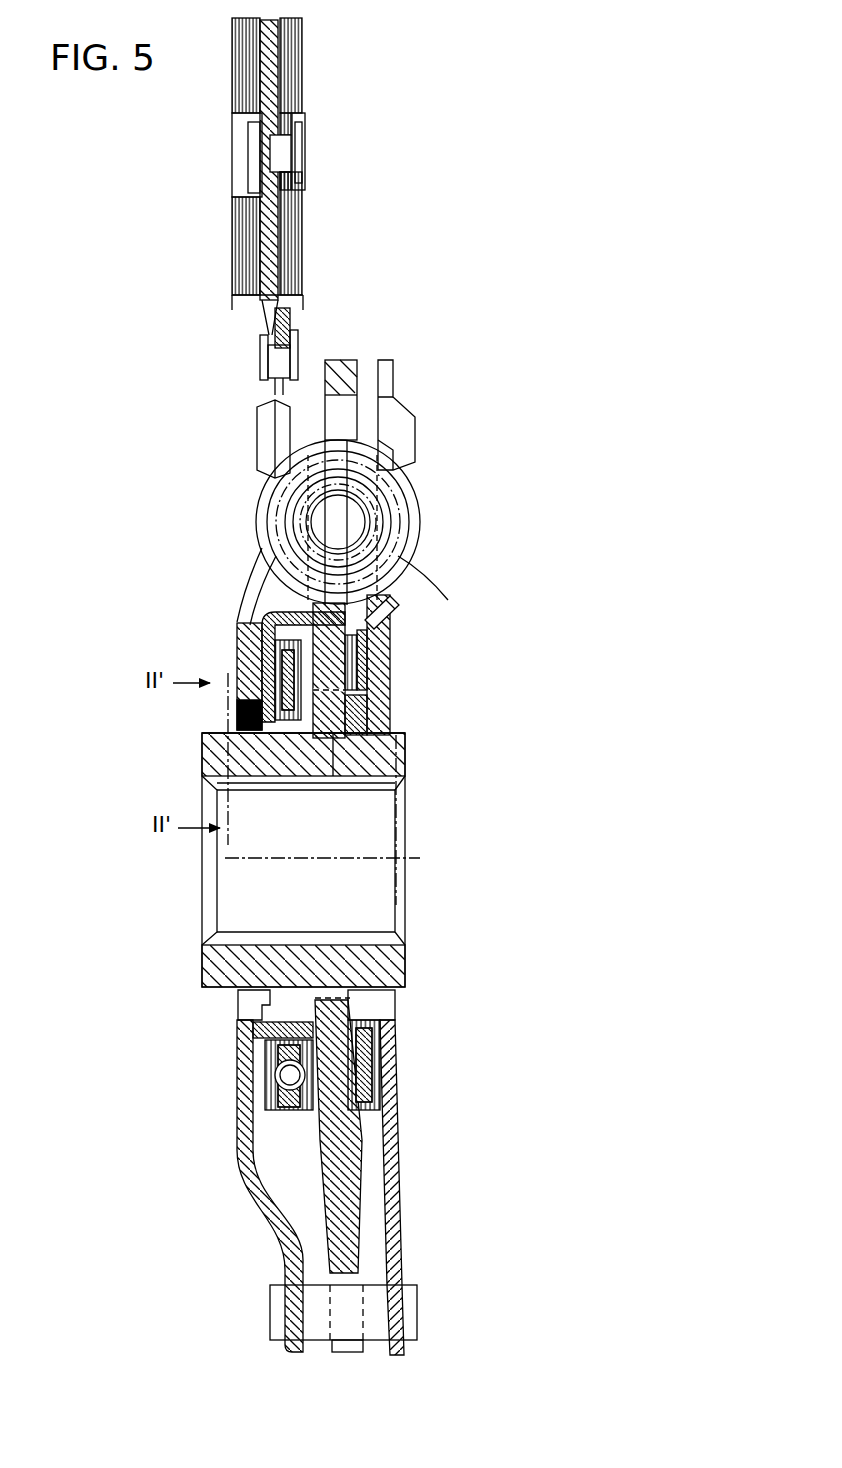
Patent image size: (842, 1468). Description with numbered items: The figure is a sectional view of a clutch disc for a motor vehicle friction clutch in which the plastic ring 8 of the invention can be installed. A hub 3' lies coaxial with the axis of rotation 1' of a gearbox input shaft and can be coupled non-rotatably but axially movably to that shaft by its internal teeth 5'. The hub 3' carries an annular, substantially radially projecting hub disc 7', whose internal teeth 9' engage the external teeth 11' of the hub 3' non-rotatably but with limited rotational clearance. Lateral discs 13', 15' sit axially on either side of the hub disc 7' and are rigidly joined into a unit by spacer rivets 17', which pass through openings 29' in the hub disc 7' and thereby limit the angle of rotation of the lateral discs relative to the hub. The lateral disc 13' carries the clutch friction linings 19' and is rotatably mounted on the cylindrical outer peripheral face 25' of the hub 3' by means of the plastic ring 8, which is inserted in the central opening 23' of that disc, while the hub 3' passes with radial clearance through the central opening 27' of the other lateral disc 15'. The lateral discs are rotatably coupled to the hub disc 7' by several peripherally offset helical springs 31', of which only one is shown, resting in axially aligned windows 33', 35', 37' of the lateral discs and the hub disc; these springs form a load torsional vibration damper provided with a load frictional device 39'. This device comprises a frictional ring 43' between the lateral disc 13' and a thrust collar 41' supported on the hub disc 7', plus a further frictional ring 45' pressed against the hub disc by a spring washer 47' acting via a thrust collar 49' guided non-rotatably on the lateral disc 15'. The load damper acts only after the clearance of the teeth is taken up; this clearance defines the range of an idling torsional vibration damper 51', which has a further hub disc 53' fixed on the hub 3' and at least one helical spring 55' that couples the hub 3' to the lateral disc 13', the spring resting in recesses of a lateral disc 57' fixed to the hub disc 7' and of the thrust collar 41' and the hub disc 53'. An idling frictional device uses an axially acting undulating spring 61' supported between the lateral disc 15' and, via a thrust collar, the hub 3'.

The axis of rotation 1' is at (270, 789).
The hub 3' is at (330, 860).
The internal teeth 5' is at (332, 796).
The hub disc 7' is at (336, 392).
The plastic ring 8 is at (238, 1003).
The internal teeth 9' is at (341, 776).
The external teeth 11' is at (318, 711).
The lateral disc 13' is at (251, 1186).
The lateral disc 15' is at (429, 1187).
The spacer rivets 17' is at (381, 1296).
The clutch friction linings 19' is at (305, 206).
The central opening 23' is at (229, 1034).
The cylindrical outer peripheral face 25' is at (270, 716).
The central opening 27' is at (407, 715).
The openings 29' is at (384, 1175).
The helical springs 31' is at (377, 522).
The window 33' is at (316, 569).
The window 35' is at (406, 609).
The window 37' is at (397, 521).
The load frictional device 39' is at (454, 606).
The thrust collar 41' is at (263, 659).
The frictional ring 43' is at (209, 675).
The frictional ring 45' is at (415, 658).
The spring washer 47' is at (423, 665).
The thrust collar 49' is at (426, 594).
The torsional vibration damper 51' is at (192, 1104).
The hub disc 53' is at (244, 640).
The helical spring 55' is at (234, 1069).
The lateral disc 57' is at (251, 1103).
The undulating spring 61' is at (410, 1050).